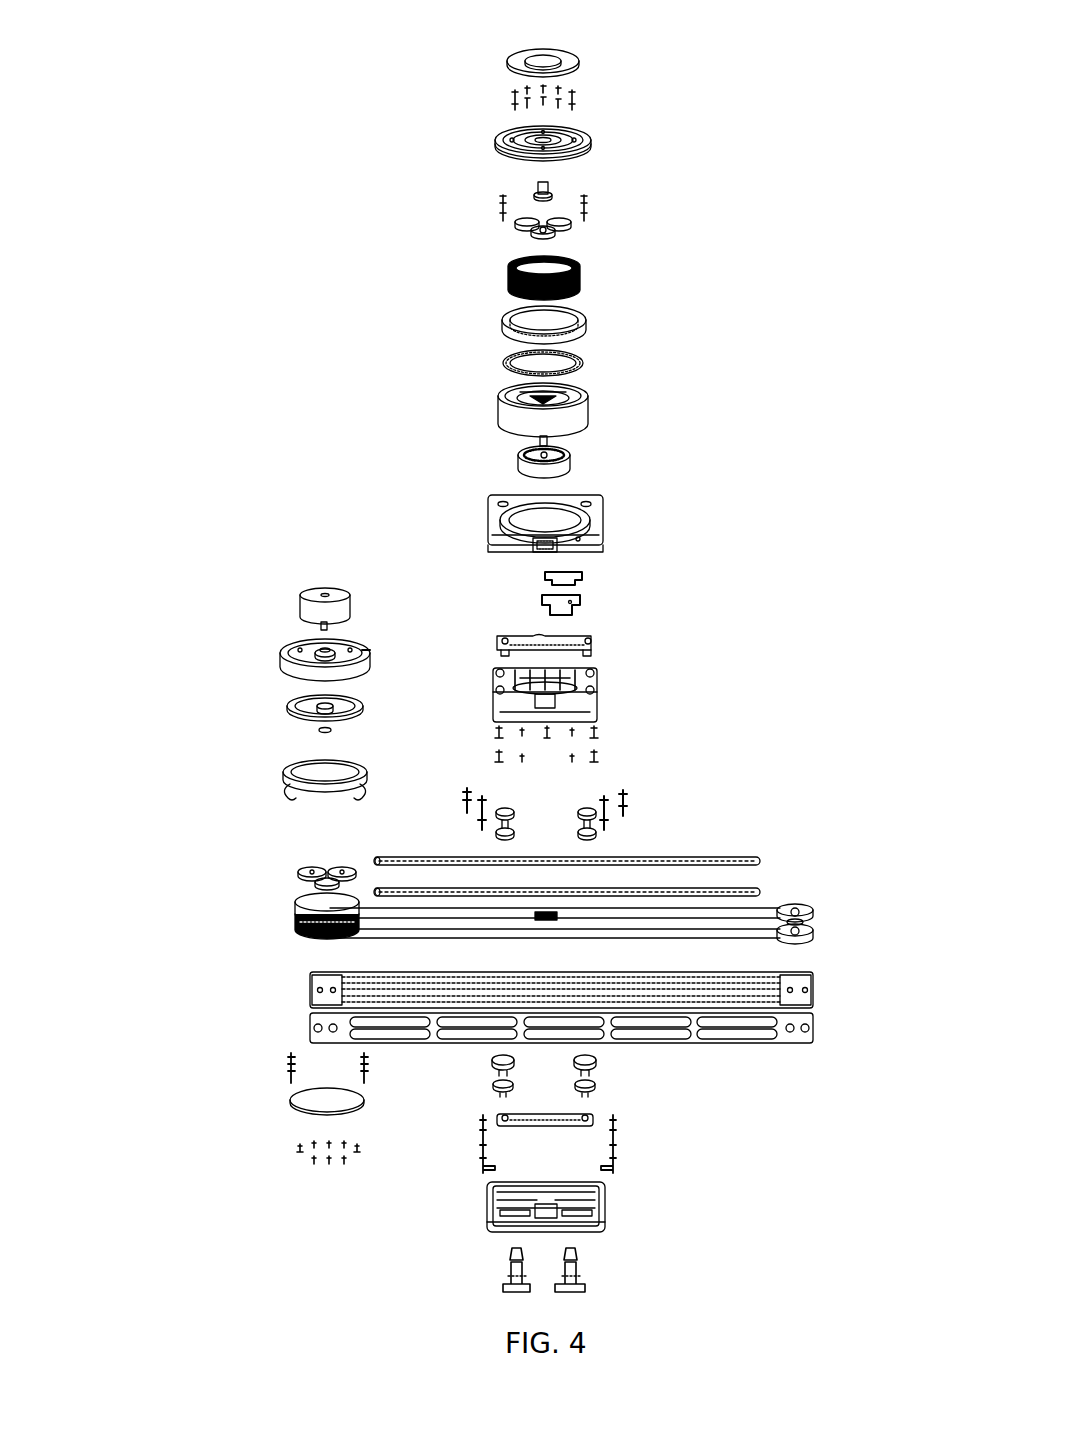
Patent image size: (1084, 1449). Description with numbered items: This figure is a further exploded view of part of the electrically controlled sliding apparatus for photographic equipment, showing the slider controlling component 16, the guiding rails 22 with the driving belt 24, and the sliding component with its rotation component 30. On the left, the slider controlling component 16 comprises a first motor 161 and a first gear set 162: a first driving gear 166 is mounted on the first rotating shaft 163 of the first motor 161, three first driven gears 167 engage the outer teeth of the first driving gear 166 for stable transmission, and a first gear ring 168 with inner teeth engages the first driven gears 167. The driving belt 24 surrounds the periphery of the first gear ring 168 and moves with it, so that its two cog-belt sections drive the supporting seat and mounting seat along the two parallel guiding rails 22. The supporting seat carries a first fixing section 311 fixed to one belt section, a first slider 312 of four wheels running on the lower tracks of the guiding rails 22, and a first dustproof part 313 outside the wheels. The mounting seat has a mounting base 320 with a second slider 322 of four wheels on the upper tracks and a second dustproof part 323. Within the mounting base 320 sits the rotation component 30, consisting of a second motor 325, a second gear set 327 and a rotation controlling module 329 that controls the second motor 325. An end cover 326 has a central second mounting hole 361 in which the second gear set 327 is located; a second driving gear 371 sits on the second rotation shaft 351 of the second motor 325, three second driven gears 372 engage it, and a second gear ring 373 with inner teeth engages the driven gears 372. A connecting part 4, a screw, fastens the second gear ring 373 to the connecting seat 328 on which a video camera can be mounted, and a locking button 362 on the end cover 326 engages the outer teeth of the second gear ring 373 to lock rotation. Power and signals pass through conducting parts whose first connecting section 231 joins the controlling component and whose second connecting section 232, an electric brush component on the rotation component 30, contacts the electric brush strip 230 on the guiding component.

The connecting part 4 is at (572, 95).
The slider controlling component 16 is at (270, 535).
The guiding rail 22 is at (740, 975).
The driving belt 24 is at (380, 938).
The rotation component 30 is at (468, 262).
The first motor 161 is at (315, 612).
The first gear set 162 is at (168, 800).
The first rotating shaft 163 is at (320, 628).
The first driving gear 166 is at (325, 866).
The first driven gear 167 is at (305, 876).
The first gear ring 168 is at (318, 904).
The electric brush strip 230 is at (620, 892).
The first connecting section 231 is at (380, 890).
The second connecting section 232 is at (575, 602).
The first fixing section 311 is at (585, 1290).
The first slider 312 is at (595, 1083).
The first dustproof part 313 is at (618, 1165).
The mounting base 320 is at (570, 705).
The second slider 322 is at (590, 815).
The second dustproof part 323 is at (626, 800).
The second motor 325 is at (564, 462).
The end cover 326 is at (590, 530).
The second gear set 327 is at (738, 125).
The connecting seat 328 is at (590, 134).
The rotation controlling module 329 is at (564, 676).
The second rotation shaft 351 is at (540, 437).
The second mounting hole 361 is at (545, 520).
The locking button 362 is at (538, 544).
The second driving gear 371 is at (548, 218).
The second driven gear 372 is at (572, 220).
The second gear ring 373 is at (580, 262).